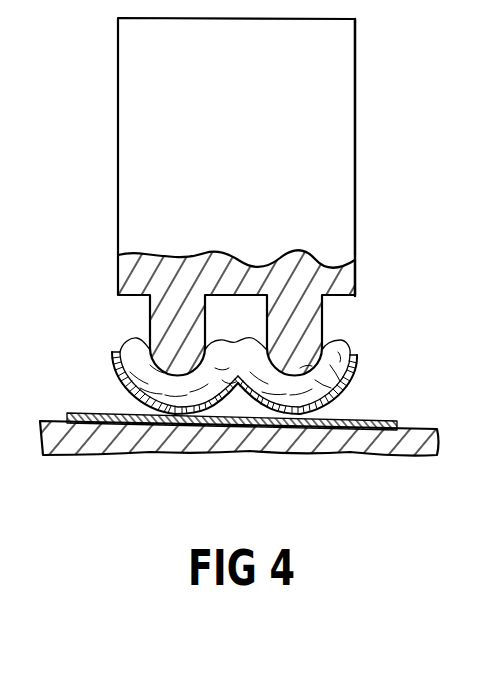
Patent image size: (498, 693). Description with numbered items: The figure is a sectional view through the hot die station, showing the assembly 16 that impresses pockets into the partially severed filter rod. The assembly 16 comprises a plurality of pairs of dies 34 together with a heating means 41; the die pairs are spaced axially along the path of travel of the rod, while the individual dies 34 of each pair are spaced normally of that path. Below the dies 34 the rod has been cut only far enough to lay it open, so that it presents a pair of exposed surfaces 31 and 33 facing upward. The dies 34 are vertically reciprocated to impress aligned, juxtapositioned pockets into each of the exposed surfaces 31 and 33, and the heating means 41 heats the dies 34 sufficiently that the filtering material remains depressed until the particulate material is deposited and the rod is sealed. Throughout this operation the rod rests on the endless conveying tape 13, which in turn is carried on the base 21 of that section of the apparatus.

The assembly 16 is at (246, 159).
The heating means 41 is at (354, 165).
The dies 34 is at (158, 311).
The exposed surface 31 is at (147, 354).
The exposed surface 33 is at (330, 343).
The endless conveying tape 13 is at (372, 417).
The base 21 is at (140, 440).